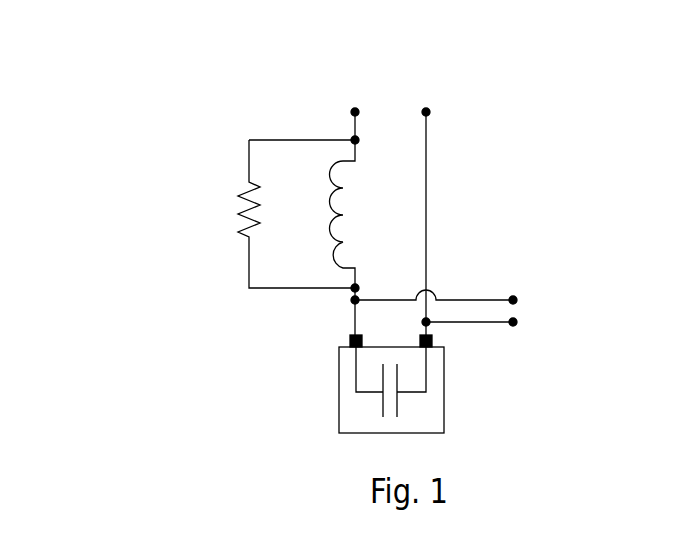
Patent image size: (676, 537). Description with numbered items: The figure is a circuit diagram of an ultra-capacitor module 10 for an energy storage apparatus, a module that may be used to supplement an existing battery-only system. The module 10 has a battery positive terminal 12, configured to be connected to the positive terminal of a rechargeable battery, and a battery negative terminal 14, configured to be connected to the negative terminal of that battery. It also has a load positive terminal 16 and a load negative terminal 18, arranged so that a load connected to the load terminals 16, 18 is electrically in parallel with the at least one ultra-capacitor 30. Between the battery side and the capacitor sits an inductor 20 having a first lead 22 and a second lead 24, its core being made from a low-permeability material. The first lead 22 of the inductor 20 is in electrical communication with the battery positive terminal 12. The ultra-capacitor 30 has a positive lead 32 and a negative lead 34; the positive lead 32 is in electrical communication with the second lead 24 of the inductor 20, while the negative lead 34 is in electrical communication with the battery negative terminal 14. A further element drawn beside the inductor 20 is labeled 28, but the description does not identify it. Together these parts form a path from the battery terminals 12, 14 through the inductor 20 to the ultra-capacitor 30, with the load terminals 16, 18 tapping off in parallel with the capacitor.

The ultra-capacitor module 10 is at (128, 61).
The battery positive terminal 12 is at (352, 110).
The battery negative terminal 14 is at (429, 112).
The load positive terminal 16 is at (513, 300).
The load negative terminal 18 is at (513, 322).
The inductor 20 is at (328, 166).
The first lead 22 is at (352, 138).
The second lead 24 is at (351, 300).
The resistor 28 is at (244, 239).
The ultra-capacitor 30 is at (339, 403).
The positive lead 32 is at (348, 341).
The negative lead 34 is at (434, 340).